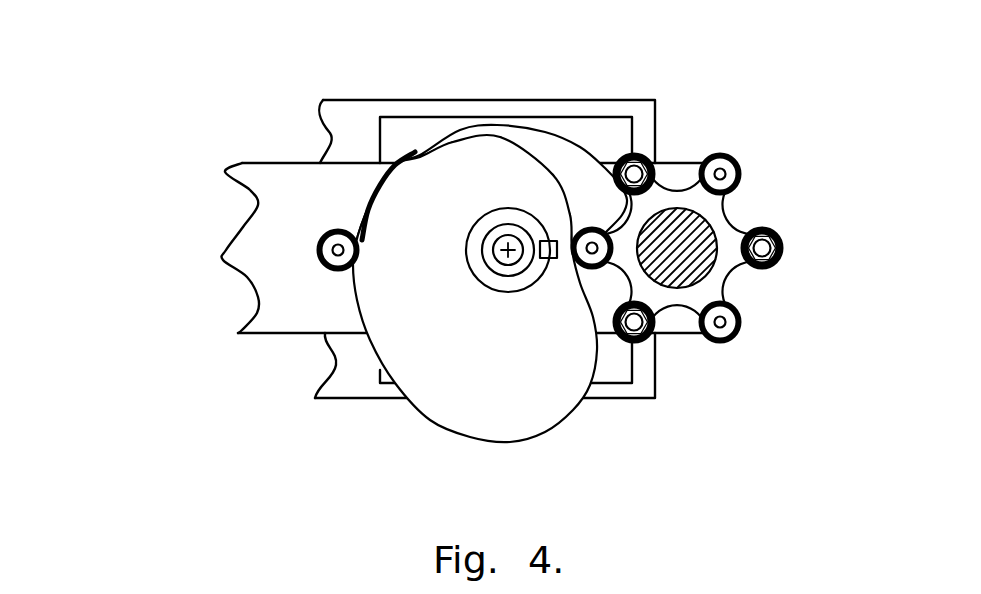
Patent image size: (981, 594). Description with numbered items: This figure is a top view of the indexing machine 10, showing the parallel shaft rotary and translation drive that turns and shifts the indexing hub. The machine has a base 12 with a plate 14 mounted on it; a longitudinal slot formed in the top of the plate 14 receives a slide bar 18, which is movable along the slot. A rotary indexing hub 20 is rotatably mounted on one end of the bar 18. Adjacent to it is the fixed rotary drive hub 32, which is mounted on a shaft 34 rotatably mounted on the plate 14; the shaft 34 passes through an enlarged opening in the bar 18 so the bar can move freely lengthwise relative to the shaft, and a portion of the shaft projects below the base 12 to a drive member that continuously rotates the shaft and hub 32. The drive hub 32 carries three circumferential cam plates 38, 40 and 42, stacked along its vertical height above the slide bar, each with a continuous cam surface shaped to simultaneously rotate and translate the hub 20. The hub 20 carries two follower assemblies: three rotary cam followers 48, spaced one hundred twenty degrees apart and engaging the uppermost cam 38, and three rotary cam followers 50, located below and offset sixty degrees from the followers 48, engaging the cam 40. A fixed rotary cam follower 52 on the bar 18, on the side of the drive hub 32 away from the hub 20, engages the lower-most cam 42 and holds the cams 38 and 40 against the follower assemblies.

The indexing machine 10 is at (95, 452).
The base 12 is at (340, 483).
The plate 14 is at (385, 135).
The slide bar 18 is at (255, 162).
The rotary indexing hub 20 is at (805, 176).
The fixed rotary drive hub 32 is at (466, 234).
The shaft 34 is at (473, 356).
The cam plate 38 is at (632, 478).
The cam plate 40 is at (568, 32).
The cam plate 42 is at (372, 197).
The rotary cam followers 48 is at (740, 83).
The rotary cam followers 50 is at (697, 57).
The fixed rotary cam follower 52 is at (322, 262).